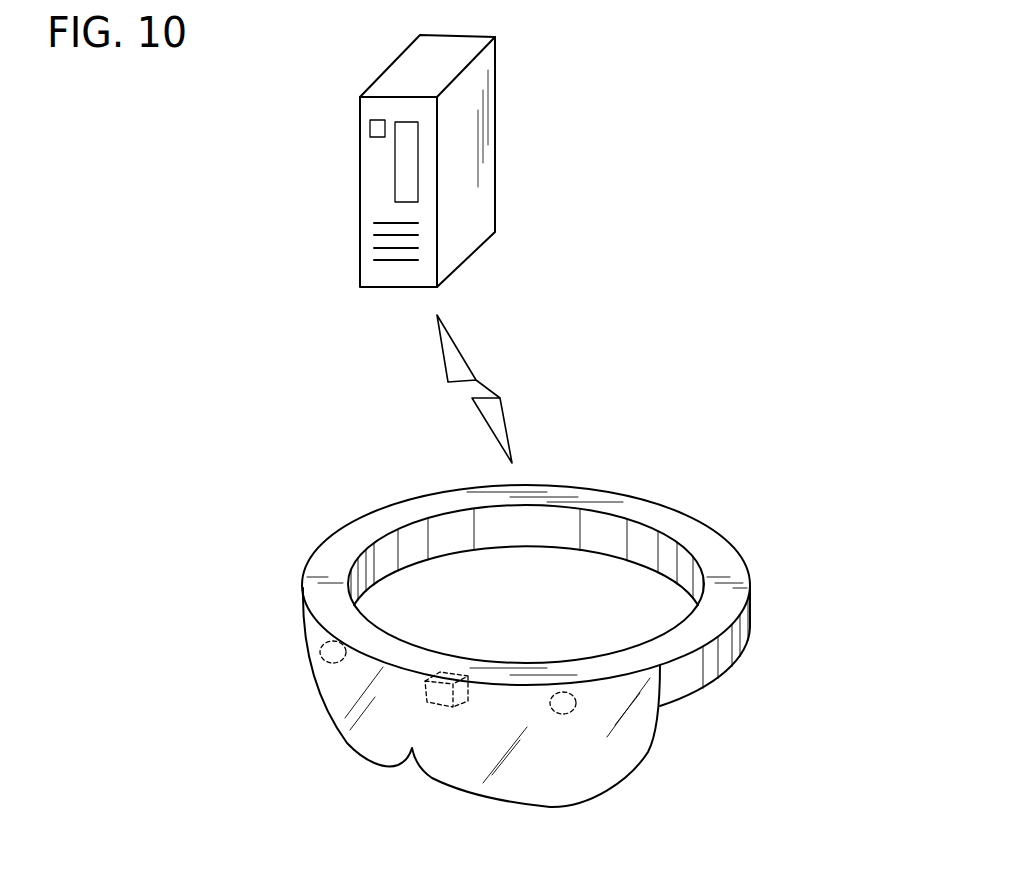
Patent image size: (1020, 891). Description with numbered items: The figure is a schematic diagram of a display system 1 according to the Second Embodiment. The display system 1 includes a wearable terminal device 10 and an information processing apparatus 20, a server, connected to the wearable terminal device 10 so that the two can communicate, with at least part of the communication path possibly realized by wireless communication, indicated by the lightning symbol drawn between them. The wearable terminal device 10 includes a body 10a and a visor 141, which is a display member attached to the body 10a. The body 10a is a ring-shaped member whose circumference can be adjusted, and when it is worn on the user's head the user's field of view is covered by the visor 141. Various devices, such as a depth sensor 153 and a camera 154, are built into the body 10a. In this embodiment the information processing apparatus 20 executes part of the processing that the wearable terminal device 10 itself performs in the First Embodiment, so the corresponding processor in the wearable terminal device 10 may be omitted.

The display system 1 is at (220, 273).
The information processing apparatus 20 is at (313, 238).
The wearable terminal device 10 is at (315, 520).
The body 10a is at (720, 603).
The visor 141 is at (603, 773).
The depth sensor 153 is at (556, 692).
The camera 154 is at (425, 692).